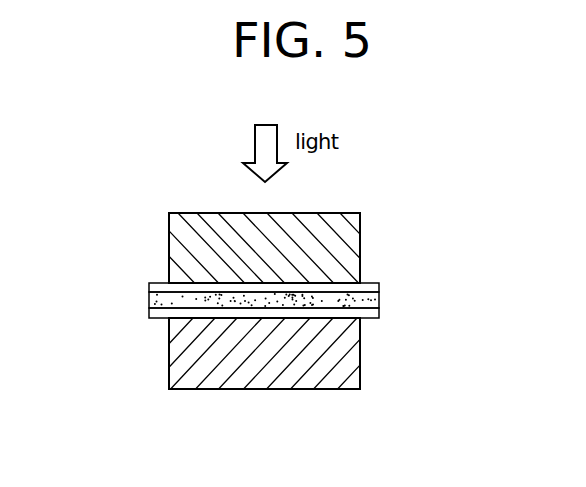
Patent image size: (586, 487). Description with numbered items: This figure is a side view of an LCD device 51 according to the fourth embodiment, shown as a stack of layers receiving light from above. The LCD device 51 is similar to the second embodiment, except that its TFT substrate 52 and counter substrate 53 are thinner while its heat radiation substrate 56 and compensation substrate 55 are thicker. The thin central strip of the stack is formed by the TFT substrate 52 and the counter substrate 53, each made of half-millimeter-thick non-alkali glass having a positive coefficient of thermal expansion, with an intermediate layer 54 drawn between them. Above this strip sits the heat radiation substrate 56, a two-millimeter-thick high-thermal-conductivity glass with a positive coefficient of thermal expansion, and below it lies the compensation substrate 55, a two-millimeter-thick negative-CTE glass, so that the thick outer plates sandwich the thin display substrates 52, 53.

The LCD device 51 is at (137, 273).
The TFT substrate 52 is at (381, 315).
The counter substrate 53 is at (381, 288).
The adhesive layer 54 is at (381, 298).
The compensation substrate 55 is at (360, 365).
The heat radiation substrate 56 is at (360, 237).